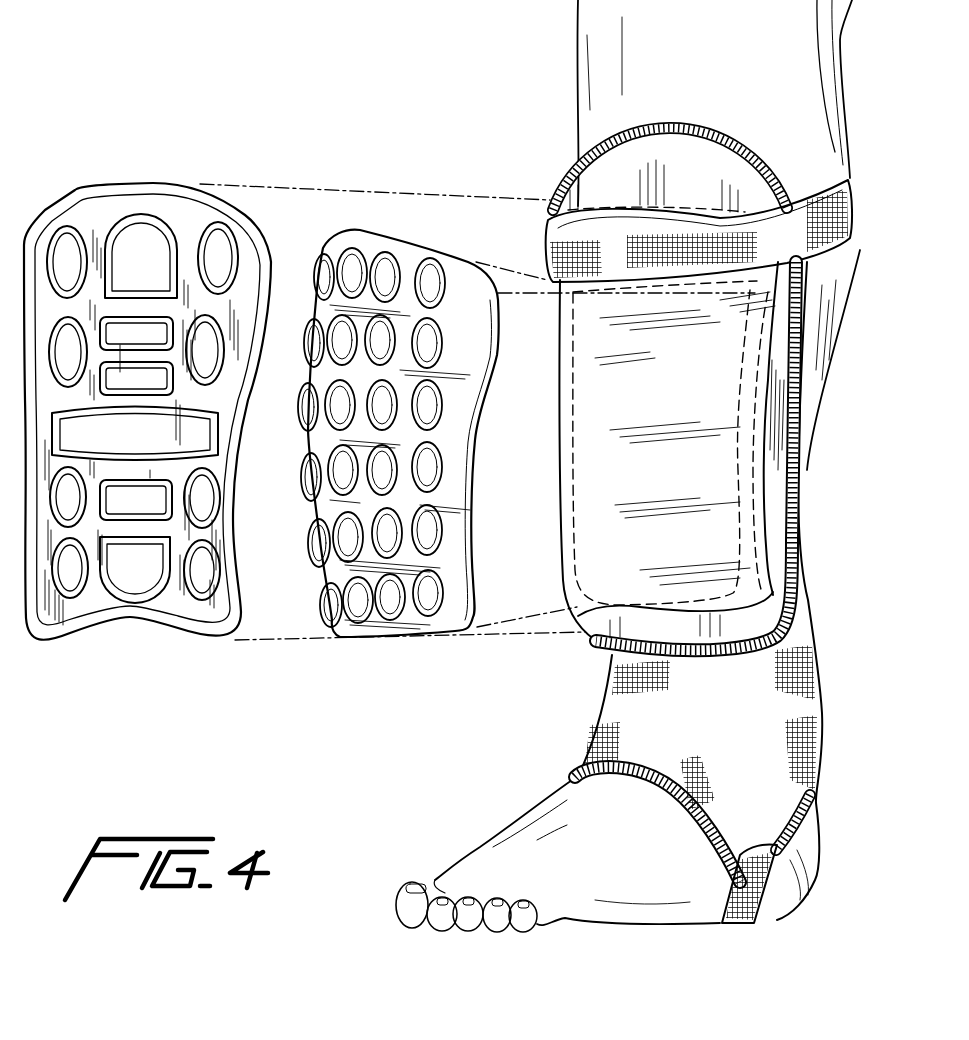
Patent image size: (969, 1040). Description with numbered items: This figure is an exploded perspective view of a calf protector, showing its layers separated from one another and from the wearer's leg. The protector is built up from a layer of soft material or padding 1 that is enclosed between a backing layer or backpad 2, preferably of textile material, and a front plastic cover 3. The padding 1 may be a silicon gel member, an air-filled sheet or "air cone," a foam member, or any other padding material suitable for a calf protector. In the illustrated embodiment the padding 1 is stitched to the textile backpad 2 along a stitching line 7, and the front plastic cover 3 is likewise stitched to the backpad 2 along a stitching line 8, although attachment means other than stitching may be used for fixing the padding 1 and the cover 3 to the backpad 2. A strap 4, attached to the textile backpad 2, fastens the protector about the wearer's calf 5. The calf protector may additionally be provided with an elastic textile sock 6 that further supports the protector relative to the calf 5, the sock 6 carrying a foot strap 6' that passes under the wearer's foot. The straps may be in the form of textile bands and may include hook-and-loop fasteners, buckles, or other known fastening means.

The padding 1 is at (407, 634).
The backpad 2 is at (565, 157).
The front plastic cover 3 is at (131, 619).
The strap 4 is at (845, 248).
The calf 5 is at (810, 472).
The elastic textile sock 6 is at (656, 763).
The heel strap 6' is at (762, 917).
The stitching line 7 is at (735, 395).
The stitching line 8 is at (752, 422).